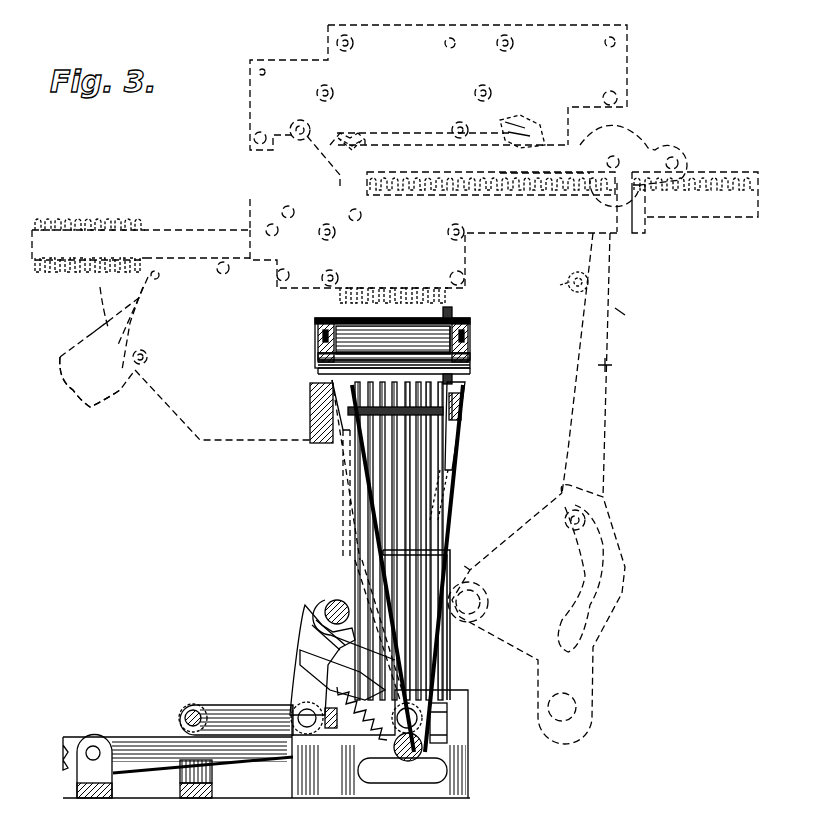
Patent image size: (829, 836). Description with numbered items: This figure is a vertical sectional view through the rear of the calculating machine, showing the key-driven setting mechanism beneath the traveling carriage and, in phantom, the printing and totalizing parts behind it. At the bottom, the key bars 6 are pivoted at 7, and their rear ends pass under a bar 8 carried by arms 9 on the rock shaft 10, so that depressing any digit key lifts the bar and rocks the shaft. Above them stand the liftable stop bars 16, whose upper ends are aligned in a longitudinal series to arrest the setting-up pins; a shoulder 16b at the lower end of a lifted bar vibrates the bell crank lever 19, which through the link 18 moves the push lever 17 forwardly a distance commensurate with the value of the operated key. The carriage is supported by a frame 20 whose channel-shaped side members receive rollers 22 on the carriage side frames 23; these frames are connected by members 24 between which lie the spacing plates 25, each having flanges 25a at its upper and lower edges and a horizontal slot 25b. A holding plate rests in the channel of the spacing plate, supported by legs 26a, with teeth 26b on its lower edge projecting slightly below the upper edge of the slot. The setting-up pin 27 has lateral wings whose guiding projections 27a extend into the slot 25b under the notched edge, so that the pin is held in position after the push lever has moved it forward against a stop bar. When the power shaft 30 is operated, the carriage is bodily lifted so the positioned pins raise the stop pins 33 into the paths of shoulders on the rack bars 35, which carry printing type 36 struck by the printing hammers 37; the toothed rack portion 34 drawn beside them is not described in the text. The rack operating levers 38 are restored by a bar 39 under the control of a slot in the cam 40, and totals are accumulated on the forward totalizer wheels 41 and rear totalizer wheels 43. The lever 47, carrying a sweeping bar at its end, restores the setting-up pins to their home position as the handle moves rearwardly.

The key bar 6 is at (178, 767).
The pivot 7 is at (98, 745).
The bar 8 is at (379, 739).
The arms 9 is at (240, 705).
The rock shaft 10 is at (193, 712).
The liftable stop bar 16 is at (425, 512).
The shoulder 16b is at (447, 735).
The push lever 17 is at (448, 470).
The link 18 is at (308, 660).
The bell crank lever 19 is at (300, 652).
The frame 20 is at (470, 347).
The rollers 22 is at (318, 340).
The carriage side frame 23 is at (318, 357).
The connecting member 24 is at (392, 343).
The spacing plate 25 is at (470, 373).
The flange 25a is at (320, 368).
The slot 25b is at (330, 388).
The legs 26a is at (538, 385).
The teeth 26b is at (375, 352).
The setting-up pin 27 is at (452, 310).
The guiding projection 27a is at (470, 318).
The shaft 30 is at (330, 603).
The stop pin 33 is at (395, 278).
The rack 34 is at (491, 184).
The rack bar 35 is at (710, 186).
The printing type 36 is at (90, 263).
The printing hammer 37 is at (90, 382).
The rack operating lever 38 is at (612, 368).
The restoring bar 39 is at (562, 291).
The cam 40 is at (536, 614).
The forward totalizer wheel 41 is at (352, 142).
The rear totalizer wheel 43 is at (520, 150).
The lever 47 is at (350, 488).